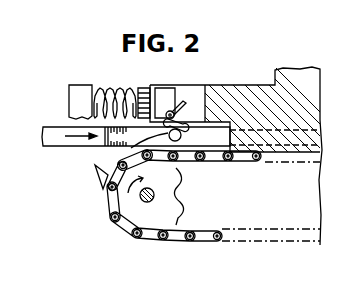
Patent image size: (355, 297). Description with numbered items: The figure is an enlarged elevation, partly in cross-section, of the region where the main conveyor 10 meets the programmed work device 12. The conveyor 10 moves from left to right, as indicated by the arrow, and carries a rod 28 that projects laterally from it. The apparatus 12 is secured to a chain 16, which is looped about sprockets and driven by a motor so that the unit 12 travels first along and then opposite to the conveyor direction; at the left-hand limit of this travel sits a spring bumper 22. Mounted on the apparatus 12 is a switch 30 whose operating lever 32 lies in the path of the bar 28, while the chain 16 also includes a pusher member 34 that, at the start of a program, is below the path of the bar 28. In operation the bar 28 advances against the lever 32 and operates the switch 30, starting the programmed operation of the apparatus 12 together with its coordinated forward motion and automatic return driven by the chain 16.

The main conveyor 10 is at (53, 128).
The programmed work device 12 is at (233, 92).
The chains 16 is at (203, 238).
The spring bumper 22 is at (118, 84).
The rod 28 is at (131, 148).
The switch 30 is at (176, 96).
The operating lever 32 is at (190, 127).
The pusher member 34 is at (98, 178).